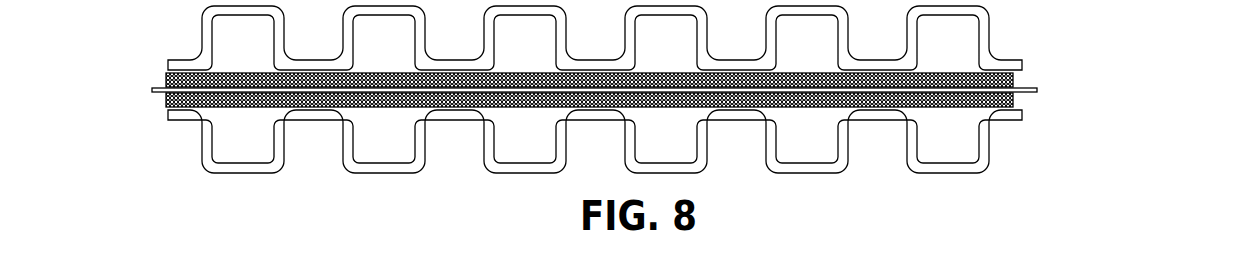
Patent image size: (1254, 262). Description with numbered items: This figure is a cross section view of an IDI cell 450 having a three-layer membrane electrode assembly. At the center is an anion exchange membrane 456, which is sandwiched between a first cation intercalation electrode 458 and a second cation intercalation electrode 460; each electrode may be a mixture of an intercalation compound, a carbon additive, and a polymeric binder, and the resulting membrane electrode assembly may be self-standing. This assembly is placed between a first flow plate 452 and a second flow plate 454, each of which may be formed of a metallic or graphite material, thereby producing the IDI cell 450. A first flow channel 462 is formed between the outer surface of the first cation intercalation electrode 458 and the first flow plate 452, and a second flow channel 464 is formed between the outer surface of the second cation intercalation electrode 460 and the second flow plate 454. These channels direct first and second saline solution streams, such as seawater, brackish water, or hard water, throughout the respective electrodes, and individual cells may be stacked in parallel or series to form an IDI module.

The IDI cell 450 is at (205, 186).
The first flow plate 452 is at (982, 168).
The second flow plate 454 is at (987, 15).
The anion exchange membrane 456 is at (922, 100).
The first cation intercalation electrode 458 is at (1013, 100).
The second cation intercalation electrode 460 is at (1013, 78).
The first flow channel 462 is at (958, 134).
The second flow channel 464 is at (948, 47).